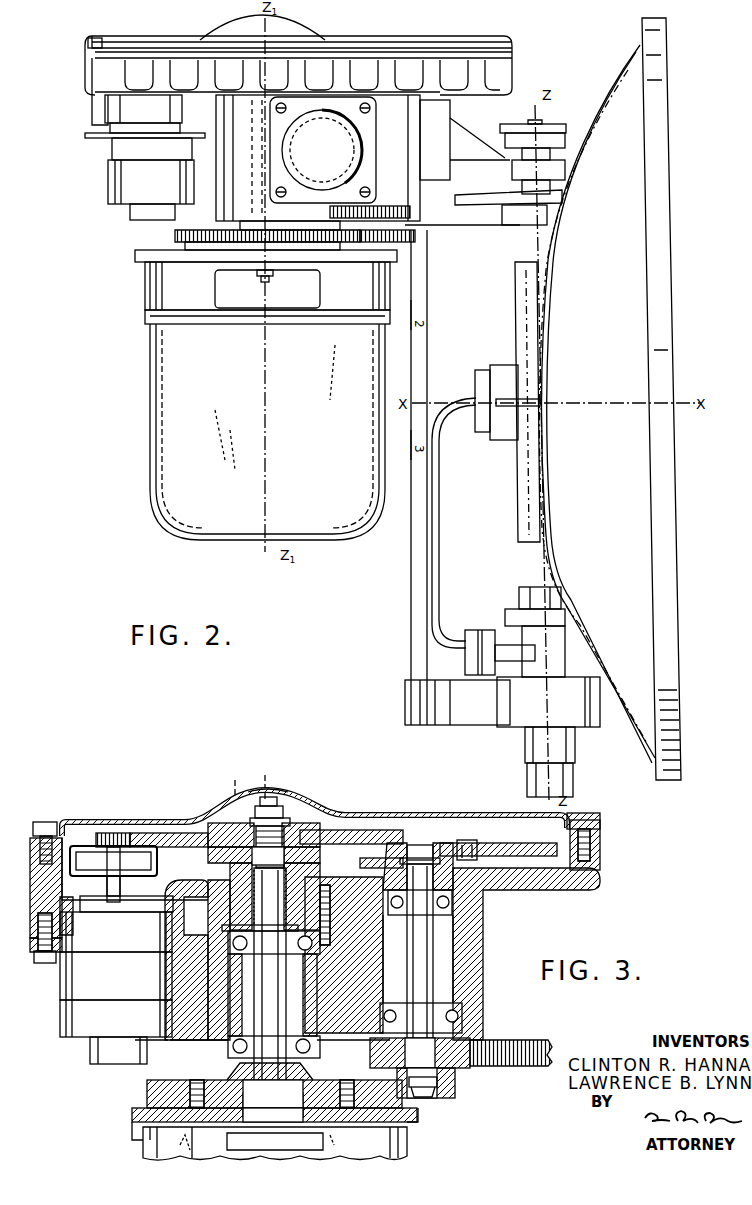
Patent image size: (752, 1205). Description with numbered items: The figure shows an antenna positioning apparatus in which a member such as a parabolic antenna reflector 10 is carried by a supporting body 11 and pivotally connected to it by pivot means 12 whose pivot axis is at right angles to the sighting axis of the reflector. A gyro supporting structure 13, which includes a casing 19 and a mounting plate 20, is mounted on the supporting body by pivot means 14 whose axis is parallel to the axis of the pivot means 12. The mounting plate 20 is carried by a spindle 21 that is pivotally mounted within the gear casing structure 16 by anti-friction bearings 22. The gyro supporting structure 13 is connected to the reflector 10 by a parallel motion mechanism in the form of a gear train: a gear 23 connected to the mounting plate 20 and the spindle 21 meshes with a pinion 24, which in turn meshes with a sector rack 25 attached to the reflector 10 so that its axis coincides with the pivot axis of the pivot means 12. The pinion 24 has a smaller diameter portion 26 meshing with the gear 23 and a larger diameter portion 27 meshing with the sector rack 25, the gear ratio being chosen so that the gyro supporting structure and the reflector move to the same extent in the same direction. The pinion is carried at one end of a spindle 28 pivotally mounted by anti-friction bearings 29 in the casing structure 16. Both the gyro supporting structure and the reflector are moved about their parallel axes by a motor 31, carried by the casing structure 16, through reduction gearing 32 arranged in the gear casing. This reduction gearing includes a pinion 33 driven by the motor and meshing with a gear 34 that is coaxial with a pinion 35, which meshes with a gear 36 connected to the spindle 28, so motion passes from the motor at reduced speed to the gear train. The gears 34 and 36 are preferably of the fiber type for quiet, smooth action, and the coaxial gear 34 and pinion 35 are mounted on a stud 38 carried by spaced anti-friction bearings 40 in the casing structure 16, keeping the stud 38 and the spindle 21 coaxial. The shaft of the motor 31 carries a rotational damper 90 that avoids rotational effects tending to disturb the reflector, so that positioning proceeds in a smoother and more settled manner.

In FIG. 2, the parabolic antenna reflector 10 is at (595, 97).
In FIG. 2, the supporting body 11 is at (478, 134).
In FIG. 2, the pivot means 12 is at (533, 210).
In FIG. 2, the gyro supporting structure 13 is at (126, 295).
In FIG. 3, the gyro supporting structure 13 is at (136, 1156).
In FIG. 3, the pivot means 14 is at (250, 1066).
In FIG. 3, the gear casing structure 16 is at (482, 927).
In FIG. 2, the casing 19 is at (170, 376).
In FIG. 3, the mounting plate 20 is at (415, 1122).
In FIG. 3, the spindle 21 is at (310, 1075).
In FIG. 3, the anti-friction bearings 22 is at (230, 946).
In FIG. 3, the gear 23 is at (150, 1091).
In FIG. 3, the pinion 24 is at (486, 1086).
In FIG. 3, the sector rack 25 is at (508, 1068).
In FIG. 3, the smaller diameter portion 26 is at (452, 1095).
In FIG. 3, the larger diameter portion 27 is at (372, 1047).
In FIG. 3, the spindle 28 is at (412, 976).
In FIG. 3, the anti-friction bearings 29 is at (443, 914).
In FIG. 3, the motor 31 is at (70, 1003).
In FIG. 3, the reduction gearing 32 is at (191, 865).
In FIG. 3, the pinion 33 is at (104, 832).
In FIG. 3, the gear 34 is at (158, 833).
In FIG. 3, the pinion 35 is at (236, 792).
In FIG. 3, the gear 36 is at (340, 833).
In FIG. 3, the stud 38 is at (248, 900).
In FIG. 3, the anti-friction bearings 40 is at (240, 900).
In FIG. 3, the rotational damper 90 is at (137, 868).